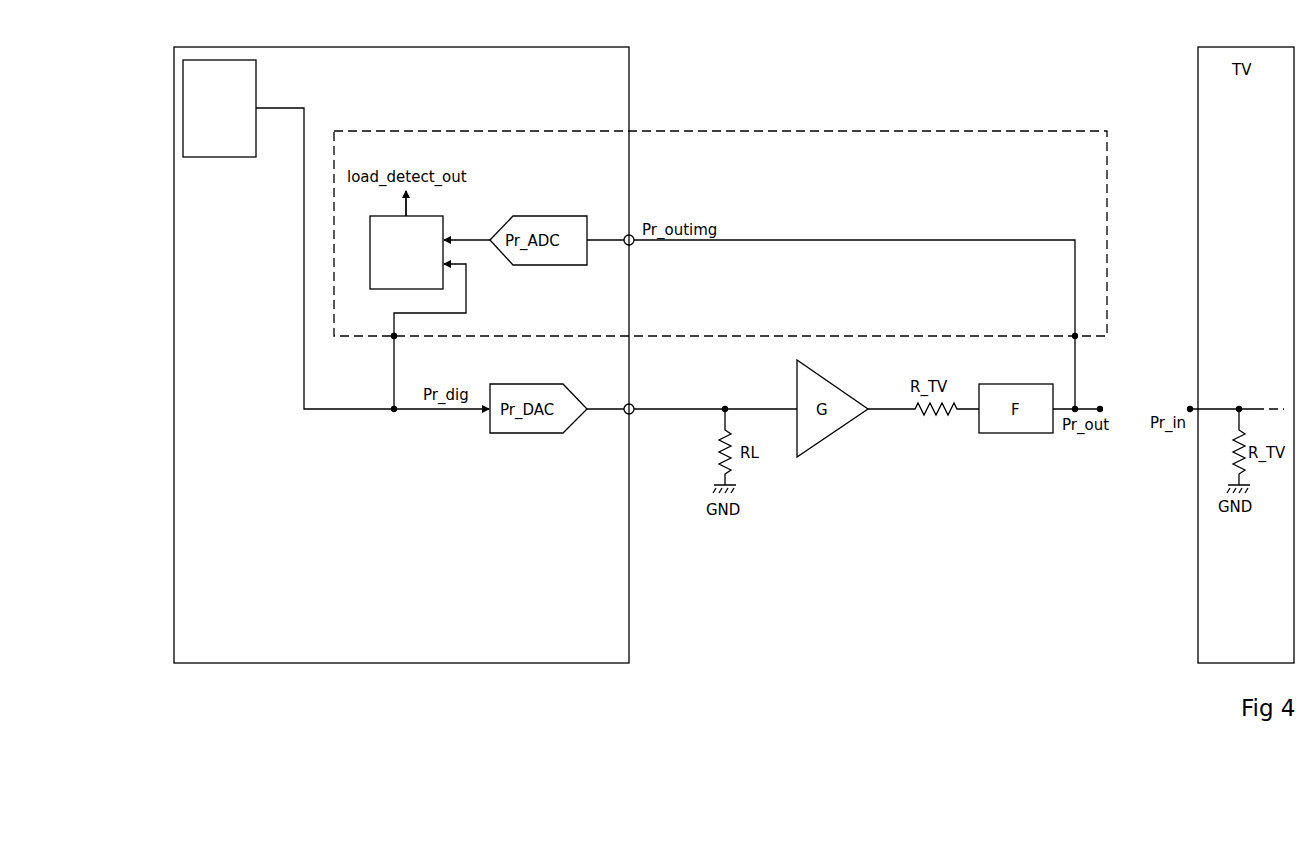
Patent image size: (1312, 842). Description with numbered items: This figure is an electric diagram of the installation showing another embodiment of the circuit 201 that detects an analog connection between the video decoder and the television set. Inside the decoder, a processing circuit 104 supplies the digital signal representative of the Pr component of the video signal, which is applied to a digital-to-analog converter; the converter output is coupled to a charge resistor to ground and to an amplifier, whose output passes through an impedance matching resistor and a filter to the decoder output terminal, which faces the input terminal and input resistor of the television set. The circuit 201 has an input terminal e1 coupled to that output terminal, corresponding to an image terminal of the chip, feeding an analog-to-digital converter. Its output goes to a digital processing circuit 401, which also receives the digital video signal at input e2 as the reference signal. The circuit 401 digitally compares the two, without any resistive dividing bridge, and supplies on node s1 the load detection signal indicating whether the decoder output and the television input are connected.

The processing circuit 104 is at (219, 108).
The circuit for detecting an analog connection 201 is at (925, 131).
The digital processing circuit 401 is at (406, 252).
The node s1 is at (408, 214).
The input terminal e1 is at (1077, 338).
The input e2 is at (396, 338).